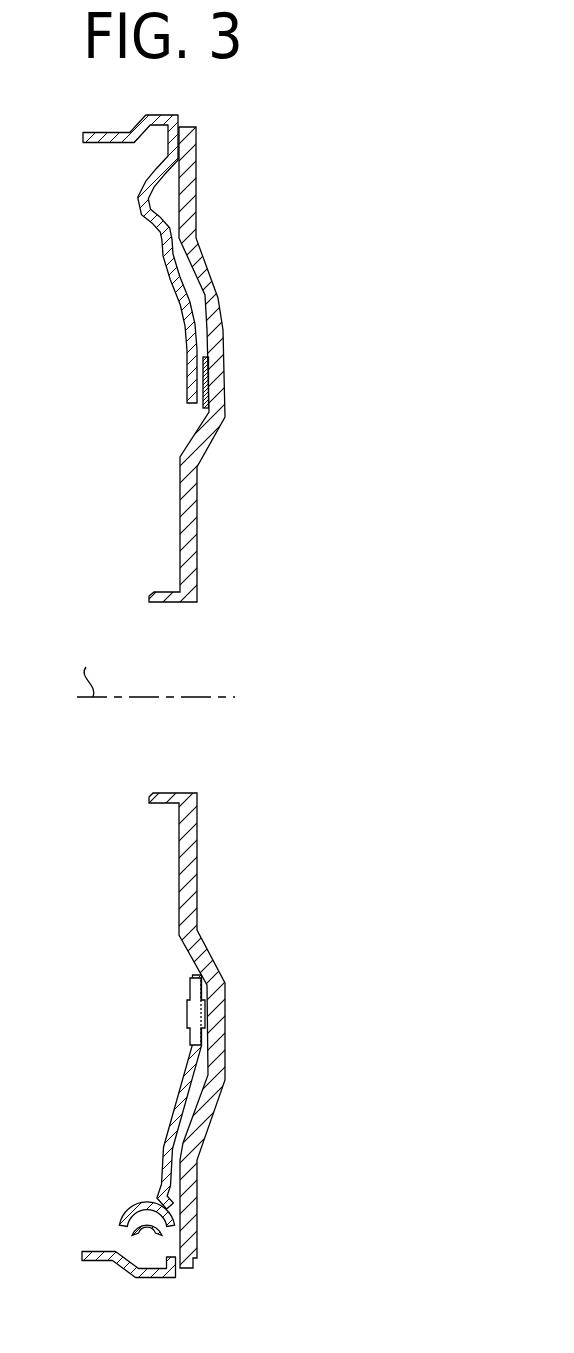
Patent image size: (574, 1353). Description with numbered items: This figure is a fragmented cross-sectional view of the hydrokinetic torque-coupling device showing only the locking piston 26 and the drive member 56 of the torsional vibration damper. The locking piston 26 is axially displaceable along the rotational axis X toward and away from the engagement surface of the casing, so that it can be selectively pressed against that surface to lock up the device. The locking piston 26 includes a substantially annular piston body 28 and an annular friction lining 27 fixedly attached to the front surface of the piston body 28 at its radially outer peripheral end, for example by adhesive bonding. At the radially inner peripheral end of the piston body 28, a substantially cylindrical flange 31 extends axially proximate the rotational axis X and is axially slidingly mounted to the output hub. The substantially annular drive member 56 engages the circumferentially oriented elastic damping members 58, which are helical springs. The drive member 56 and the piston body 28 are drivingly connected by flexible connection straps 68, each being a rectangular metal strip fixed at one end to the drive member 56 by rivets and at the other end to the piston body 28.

The locking piston 26 is at (190, 363).
The annular friction lining 27 is at (198, 168).
The piston body 28 is at (188, 490).
The cylindrical flange 31 is at (168, 796).
The drive member 56 is at (171, 278).
The elastic damping member 58 is at (141, 1126).
The connection strap 68 is at (201, 407).
The rotational axis X is at (156, 667).